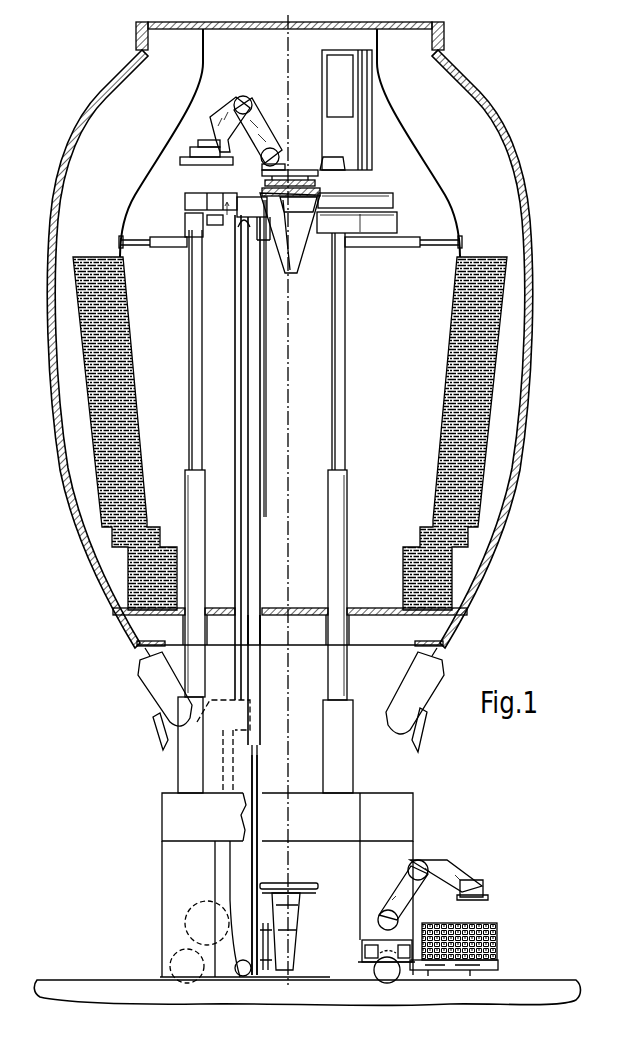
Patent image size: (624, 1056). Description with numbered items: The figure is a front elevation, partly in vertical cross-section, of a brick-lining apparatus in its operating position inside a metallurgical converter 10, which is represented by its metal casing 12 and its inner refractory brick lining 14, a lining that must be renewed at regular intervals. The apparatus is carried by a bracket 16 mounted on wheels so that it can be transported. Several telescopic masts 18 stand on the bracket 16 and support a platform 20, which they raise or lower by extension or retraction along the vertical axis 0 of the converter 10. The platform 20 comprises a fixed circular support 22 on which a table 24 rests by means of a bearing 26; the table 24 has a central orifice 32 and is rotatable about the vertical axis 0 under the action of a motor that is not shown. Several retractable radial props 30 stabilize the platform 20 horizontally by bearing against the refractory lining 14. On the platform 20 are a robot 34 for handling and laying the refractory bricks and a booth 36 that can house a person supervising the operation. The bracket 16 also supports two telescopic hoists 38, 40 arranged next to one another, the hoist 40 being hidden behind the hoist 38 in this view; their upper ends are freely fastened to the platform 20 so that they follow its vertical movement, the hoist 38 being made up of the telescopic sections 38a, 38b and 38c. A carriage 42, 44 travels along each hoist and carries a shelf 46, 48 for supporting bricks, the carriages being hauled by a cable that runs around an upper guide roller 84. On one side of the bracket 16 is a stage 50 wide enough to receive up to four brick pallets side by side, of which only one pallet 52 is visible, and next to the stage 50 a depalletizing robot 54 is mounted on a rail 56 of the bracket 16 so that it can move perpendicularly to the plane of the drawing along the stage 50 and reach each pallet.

The vertical axis 0 is at (306, 320).
The converter 10 is at (530, 172).
The metal casing 12 is at (520, 332).
The refractory brick lining 14 is at (443, 418).
The bracket 16 is at (418, 803).
The telescopic masts 18 is at (195, 530).
The platform 20 is at (342, 252).
The fixed circular support 22 is at (390, 222).
The table 24 is at (378, 195).
The bearing 26 is at (231, 224).
The retractable radial props 30 is at (160, 247).
The central orifice 32 is at (310, 206).
The robot 34 is at (258, 118).
The booth 36 is at (364, 127).
The hoist 38 is at (262, 422).
The lower telescopic section 38a is at (260, 770).
The telescopic section 38b is at (262, 632).
The telescopic section 38c is at (262, 355).
The hoist 40 is at (250, 456).
The carriage 42 is at (264, 976).
The carriage 44 is at (265, 290).
The shelf 46 is at (300, 930).
The shelf 48 is at (290, 175).
The stage 50 is at (500, 970).
The brick pallet 52 is at (492, 925).
The depalletizing robot 54 is at (437, 860).
The rail 56 is at (390, 982).
The upper guide roller 84 is at (228, 198).